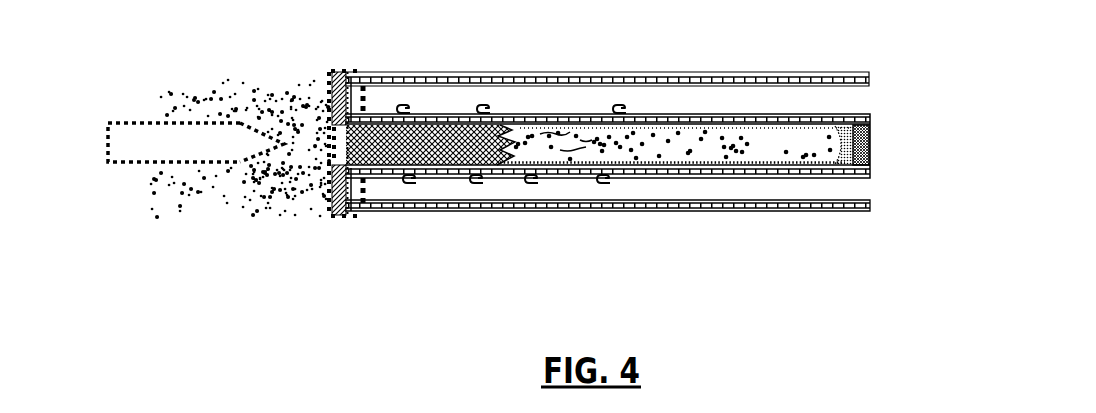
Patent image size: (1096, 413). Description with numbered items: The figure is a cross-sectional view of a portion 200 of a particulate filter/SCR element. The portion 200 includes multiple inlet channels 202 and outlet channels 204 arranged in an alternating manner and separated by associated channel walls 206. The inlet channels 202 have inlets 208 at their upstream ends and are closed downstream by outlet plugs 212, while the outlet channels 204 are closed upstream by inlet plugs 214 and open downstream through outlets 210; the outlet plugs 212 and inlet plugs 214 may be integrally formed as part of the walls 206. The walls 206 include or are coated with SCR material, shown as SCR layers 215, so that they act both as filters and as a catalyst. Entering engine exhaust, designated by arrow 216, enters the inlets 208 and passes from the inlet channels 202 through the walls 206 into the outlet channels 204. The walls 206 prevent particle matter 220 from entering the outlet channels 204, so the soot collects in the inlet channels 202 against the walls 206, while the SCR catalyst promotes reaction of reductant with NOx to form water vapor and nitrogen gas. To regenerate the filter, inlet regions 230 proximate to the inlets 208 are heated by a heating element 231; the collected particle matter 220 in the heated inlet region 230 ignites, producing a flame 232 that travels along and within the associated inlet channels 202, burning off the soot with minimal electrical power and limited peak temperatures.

The portion of PF/SCR element 200 is at (798, 45).
The inlet channels 202 is at (547, 143).
The outlet channels 204 is at (860, 187).
The channel walls 206 is at (725, 212).
The inlets 208 is at (330, 108).
The outlets 210 is at (872, 80).
The outlet plugs 212 is at (848, 173).
The inlet plugs 214 is at (332, 88).
The SCR layers 215 is at (860, 210).
The engine exhaust 216 is at (108, 165).
The particle matter 220 is at (781, 135).
The inlet regions 230 is at (343, 218).
The heating element 231 is at (358, 220).
The flame 232 is at (437, 126).